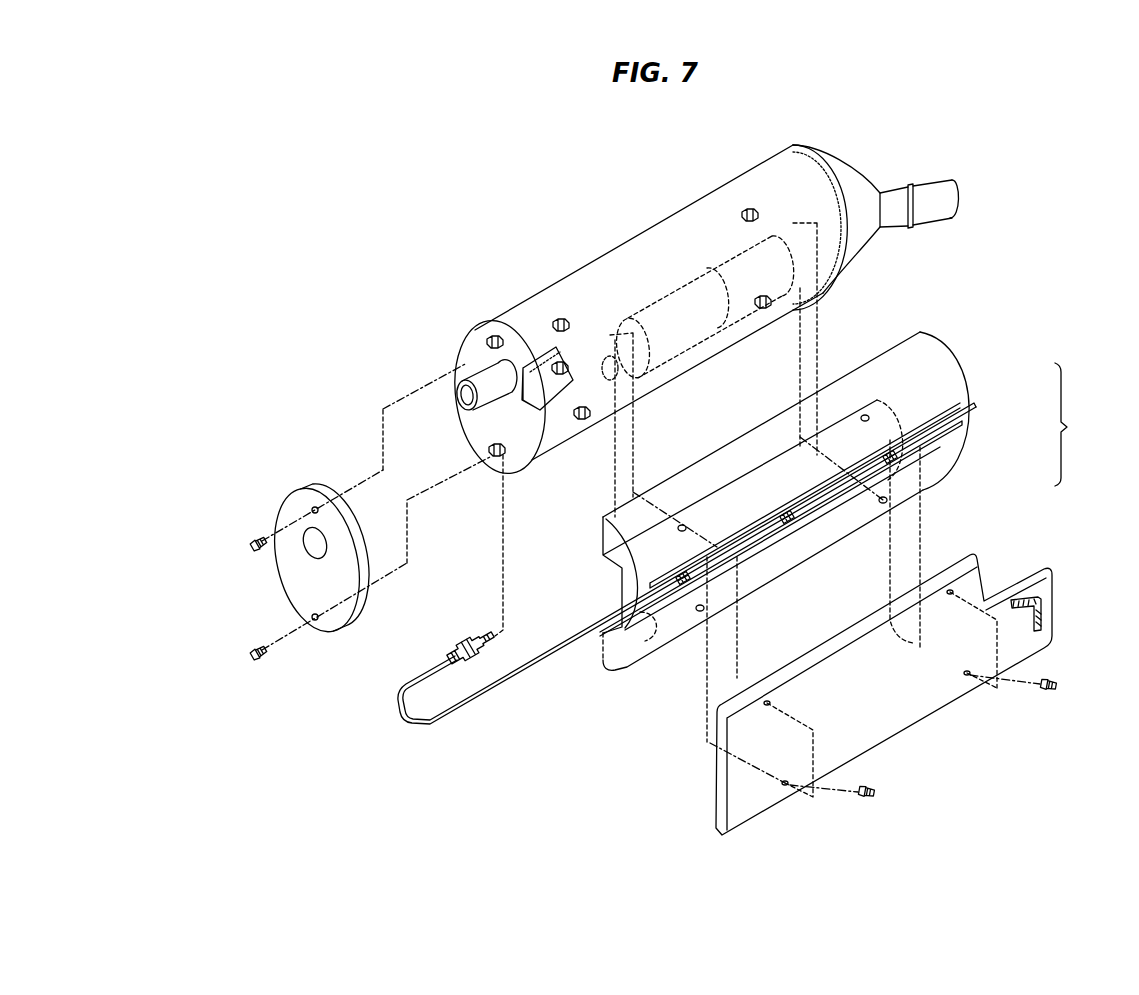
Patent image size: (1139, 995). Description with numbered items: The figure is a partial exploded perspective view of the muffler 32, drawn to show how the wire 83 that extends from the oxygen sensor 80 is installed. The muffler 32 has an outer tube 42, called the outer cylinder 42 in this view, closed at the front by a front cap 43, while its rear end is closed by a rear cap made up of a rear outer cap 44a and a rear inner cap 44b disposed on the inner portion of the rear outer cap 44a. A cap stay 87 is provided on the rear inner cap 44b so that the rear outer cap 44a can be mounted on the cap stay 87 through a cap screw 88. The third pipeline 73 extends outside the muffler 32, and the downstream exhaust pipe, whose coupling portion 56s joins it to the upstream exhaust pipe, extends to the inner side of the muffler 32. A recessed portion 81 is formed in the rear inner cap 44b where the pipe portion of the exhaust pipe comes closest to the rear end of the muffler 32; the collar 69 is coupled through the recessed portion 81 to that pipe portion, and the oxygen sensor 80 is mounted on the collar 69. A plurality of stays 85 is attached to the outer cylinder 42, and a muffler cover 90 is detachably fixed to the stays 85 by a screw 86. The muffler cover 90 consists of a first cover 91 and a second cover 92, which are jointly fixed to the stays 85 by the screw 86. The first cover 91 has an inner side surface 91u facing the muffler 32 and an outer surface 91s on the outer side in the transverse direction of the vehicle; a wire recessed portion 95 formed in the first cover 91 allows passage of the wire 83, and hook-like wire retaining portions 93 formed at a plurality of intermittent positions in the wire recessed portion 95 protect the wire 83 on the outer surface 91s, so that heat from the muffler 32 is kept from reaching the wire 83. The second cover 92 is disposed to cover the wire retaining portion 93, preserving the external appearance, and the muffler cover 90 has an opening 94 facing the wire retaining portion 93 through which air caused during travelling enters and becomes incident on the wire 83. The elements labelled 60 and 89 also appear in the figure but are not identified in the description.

The muffler 32 is at (645, 221).
The outer tube 42 is at (700, 232).
The front cap 43 is at (857, 181).
The rear outer cap 44a is at (294, 507).
The rear inner cap 44b is at (470, 350).
The coupling portion 56s is at (933, 216).
The bracket 60 is at (756, 312).
The collar 69 is at (556, 318).
The third pipeline 73 is at (473, 362).
The oxygen sensor 80 is at (470, 638).
The recessed portion 81 is at (528, 345).
The wire 83 is at (513, 690).
The stays 85 is at (752, 208).
The screw 86 is at (1060, 689).
The cap stay 87 is at (485, 338).
The cap screw 88 is at (247, 652).
The nut 89 is at (592, 412).
The muffler cover 90 is at (1077, 424).
The first cover 91 is at (828, 485).
The outer surface 91s is at (935, 358).
The inner side surface 91u is at (892, 352).
The second cover 92 is at (983, 563).
The wire retaining portion 93 is at (684, 588).
The opening 94 is at (1048, 617).
The wire recessed portion 95 is at (658, 615).